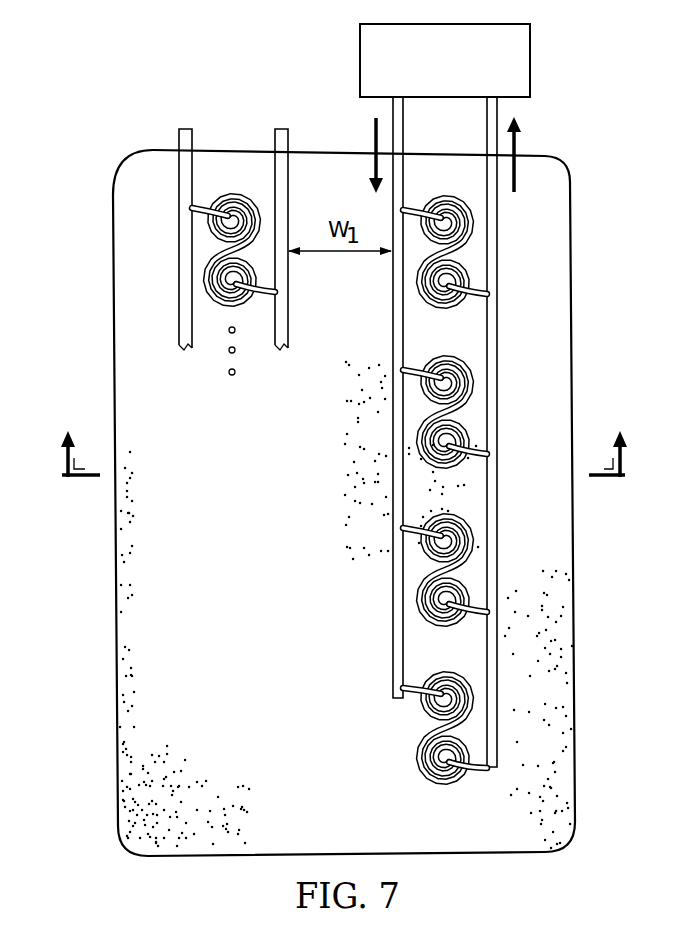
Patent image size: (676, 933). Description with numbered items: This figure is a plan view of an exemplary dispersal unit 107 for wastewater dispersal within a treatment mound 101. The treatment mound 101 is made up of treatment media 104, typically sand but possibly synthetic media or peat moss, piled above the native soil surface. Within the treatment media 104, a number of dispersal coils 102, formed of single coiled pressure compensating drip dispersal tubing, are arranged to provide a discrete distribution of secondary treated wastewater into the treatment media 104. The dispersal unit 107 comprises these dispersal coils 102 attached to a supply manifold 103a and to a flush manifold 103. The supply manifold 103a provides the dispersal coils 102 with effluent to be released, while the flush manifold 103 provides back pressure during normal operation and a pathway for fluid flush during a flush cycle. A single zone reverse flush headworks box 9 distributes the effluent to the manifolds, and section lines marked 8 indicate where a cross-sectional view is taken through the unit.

The treatment mound 101 is at (104, 71).
The dispersal coils 102 is at (472, 236).
The flush manifold 103 is at (497, 325).
The supply manifold 103a is at (393, 312).
The treatment media 104 is at (295, 512).
The dispersal unit 107 is at (162, 172).
The single zone reverse flush headworks box 9 is at (453, 74).
The section line 8 is at (343, 439).